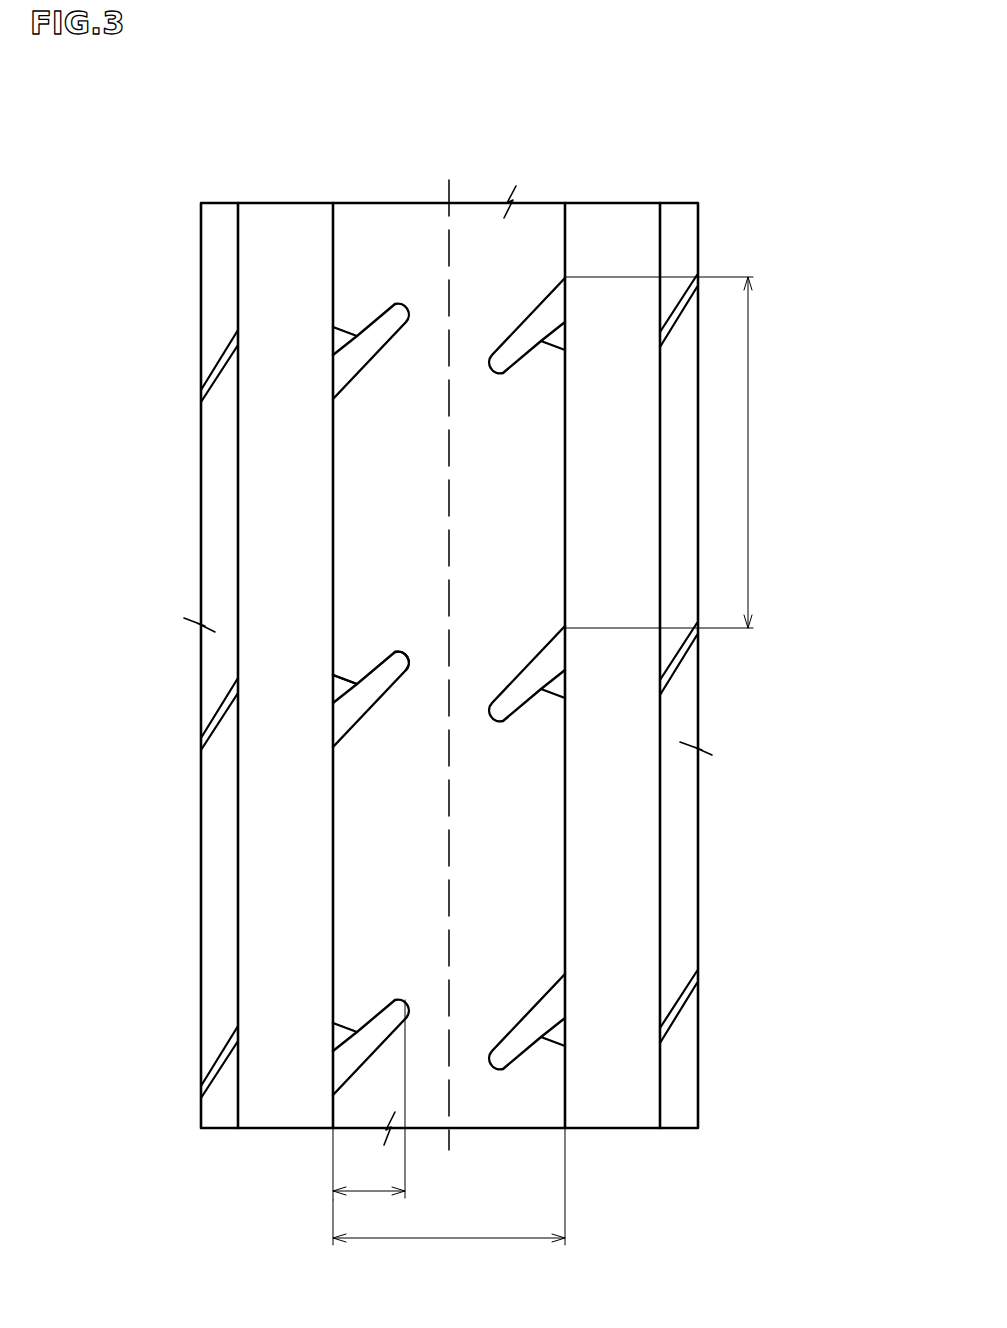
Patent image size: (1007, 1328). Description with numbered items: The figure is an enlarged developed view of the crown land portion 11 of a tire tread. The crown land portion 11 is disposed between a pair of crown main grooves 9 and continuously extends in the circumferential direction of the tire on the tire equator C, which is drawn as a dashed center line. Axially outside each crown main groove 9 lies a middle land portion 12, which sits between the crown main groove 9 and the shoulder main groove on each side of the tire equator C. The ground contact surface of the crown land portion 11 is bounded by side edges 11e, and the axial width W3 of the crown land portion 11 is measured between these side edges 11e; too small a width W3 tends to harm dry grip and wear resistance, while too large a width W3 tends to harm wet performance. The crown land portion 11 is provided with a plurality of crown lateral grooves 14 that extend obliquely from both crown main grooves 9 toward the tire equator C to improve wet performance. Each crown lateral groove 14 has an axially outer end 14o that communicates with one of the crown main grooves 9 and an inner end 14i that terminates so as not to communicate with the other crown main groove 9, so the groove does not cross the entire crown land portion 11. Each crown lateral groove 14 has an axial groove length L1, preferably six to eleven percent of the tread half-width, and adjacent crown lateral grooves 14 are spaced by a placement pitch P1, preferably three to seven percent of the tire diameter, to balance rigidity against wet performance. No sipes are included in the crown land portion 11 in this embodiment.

The crown main groove 9 is at (295, 242).
The crown land portion 11 is at (423, 240).
The side edge of the crown land portion 11e is at (333, 472).
The middle land portion 12 is at (220, 195).
The crown lateral groove 14 is at (347, 367).
The inner end of the crown lateral groove 14i is at (406, 669).
The outer end of the crown lateral groove 14o is at (333, 722).
The tire equator C is at (449, 651).
The placement pitch P1 is at (749, 491).
The groove length L1 is at (372, 1190).
The axial width of the crown land portion W3 is at (447, 1238).